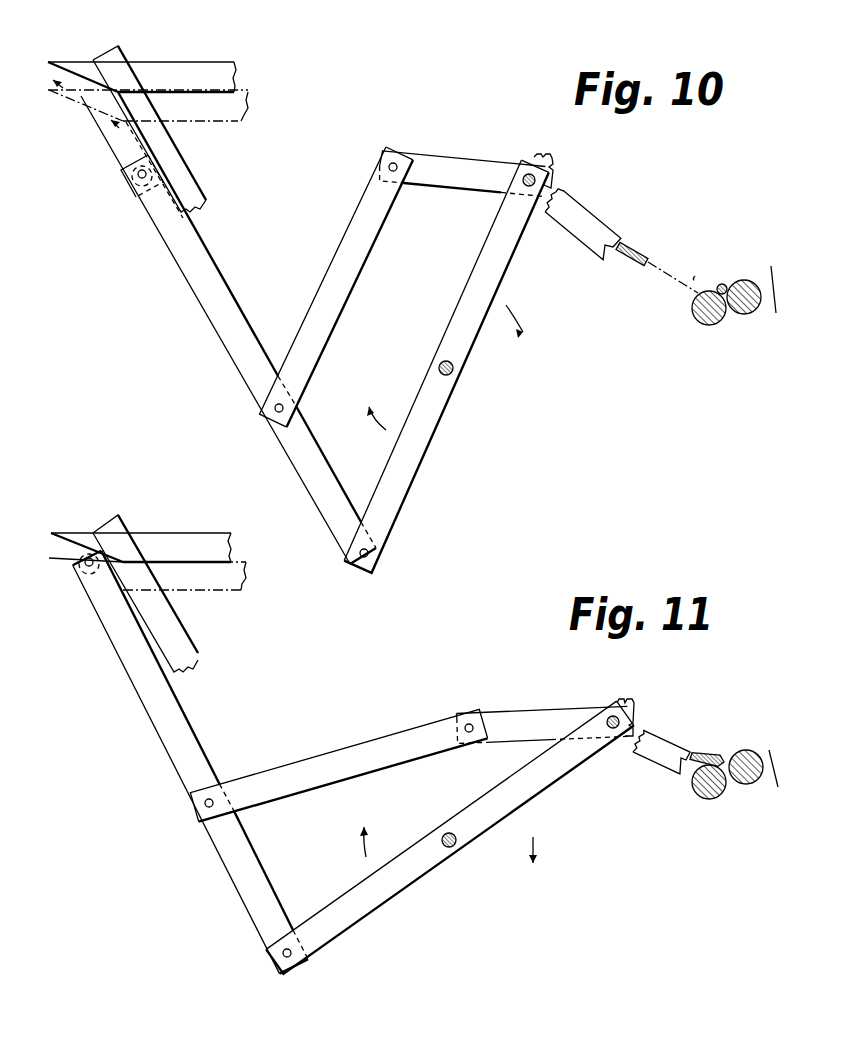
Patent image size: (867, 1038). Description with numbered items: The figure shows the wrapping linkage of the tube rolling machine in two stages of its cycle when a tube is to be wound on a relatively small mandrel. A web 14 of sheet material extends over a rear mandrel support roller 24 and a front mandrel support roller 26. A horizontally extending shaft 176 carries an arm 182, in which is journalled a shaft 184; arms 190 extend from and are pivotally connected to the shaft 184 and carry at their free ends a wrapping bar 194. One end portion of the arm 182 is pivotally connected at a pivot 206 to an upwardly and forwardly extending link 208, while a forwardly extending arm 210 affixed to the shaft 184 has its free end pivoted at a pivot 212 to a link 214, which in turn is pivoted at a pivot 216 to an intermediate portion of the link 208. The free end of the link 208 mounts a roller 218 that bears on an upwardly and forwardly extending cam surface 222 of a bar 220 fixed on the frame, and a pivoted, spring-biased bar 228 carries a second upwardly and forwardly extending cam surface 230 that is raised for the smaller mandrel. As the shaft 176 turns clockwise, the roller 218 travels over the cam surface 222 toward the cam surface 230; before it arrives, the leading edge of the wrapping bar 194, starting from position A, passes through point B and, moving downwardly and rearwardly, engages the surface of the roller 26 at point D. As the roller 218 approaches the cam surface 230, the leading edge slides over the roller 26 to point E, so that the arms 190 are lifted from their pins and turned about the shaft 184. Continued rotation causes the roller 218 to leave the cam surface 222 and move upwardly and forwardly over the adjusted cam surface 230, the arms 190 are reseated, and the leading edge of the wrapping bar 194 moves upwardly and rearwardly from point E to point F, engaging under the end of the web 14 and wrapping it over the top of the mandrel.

In FIG. 10, the web 14 is at (776, 278).
In FIG. 11, the web 14 is at (779, 758).
In FIG. 10, the rear mandrel support roller 24 is at (742, 309).
In FIG. 11, the rear mandrel support roller 24 is at (748, 782).
In FIG. 10, the front mandrel support roller 26 is at (710, 325).
In FIG. 11, the front mandrel support roller 26 is at (698, 797).
In FIG. 10, the shaft 176 is at (452, 370).
In FIG. 11, the shaft 176 is at (452, 847).
In FIG. 10, the arm 182 is at (508, 245).
In FIG. 11, the arm 182 is at (355, 913).
In FIG. 10, the shaft 184 is at (530, 174).
In FIG. 11, the shaft 184 is at (605, 722).
In FIG. 10, the arm 190 is at (578, 218).
In FIG. 11, the arm 190 is at (667, 747).
In FIG. 10, the wrapping bar 194 is at (638, 252).
In FIG. 11, the wrapping bar 194 is at (722, 752).
In FIG. 10, the pivot 206 is at (360, 561).
In FIG. 10, the link 208 is at (208, 298).
In FIG. 11, the link 208 is at (165, 738).
In FIG. 10, the arm 210 is at (463, 172).
In FIG. 11, the arm 210 is at (530, 718).
In FIG. 10, the pivot 212 is at (392, 163).
In FIG. 11, the pivot 212 is at (468, 723).
In FIG. 10, the link 214 is at (345, 255).
In FIG. 11, the link 214 is at (363, 752).
In FIG. 10, the pivot 216 is at (274, 407).
In FIG. 11, the pivot 216 is at (204, 803).
In FIG. 10, the roller 218 is at (135, 186).
In FIG. 11, the roller 218 is at (83, 577).
In FIG. 10, the bar 220 is at (177, 171).
In FIG. 11, the bar 220 is at (177, 647).
In FIG. 10, the cam surface 222 is at (128, 142).
In FIG. 11, the cam surface 222 is at (153, 643).
In FIG. 10, the bar 228 is at (225, 82).
In FIG. 11, the bar 228 is at (168, 540).
In FIG. 10, the cam surface 230 is at (77, 73).
In FIG. 11, the cam surface 230 is at (48, 548).
In FIG. 10, the position A is at (647, 260).
In FIG. 10, the point B is at (662, 278).
In FIG. 10, the point D is at (697, 297).
In FIG. 10, the point E is at (705, 283).
In FIG. 11, the point F is at (723, 760).